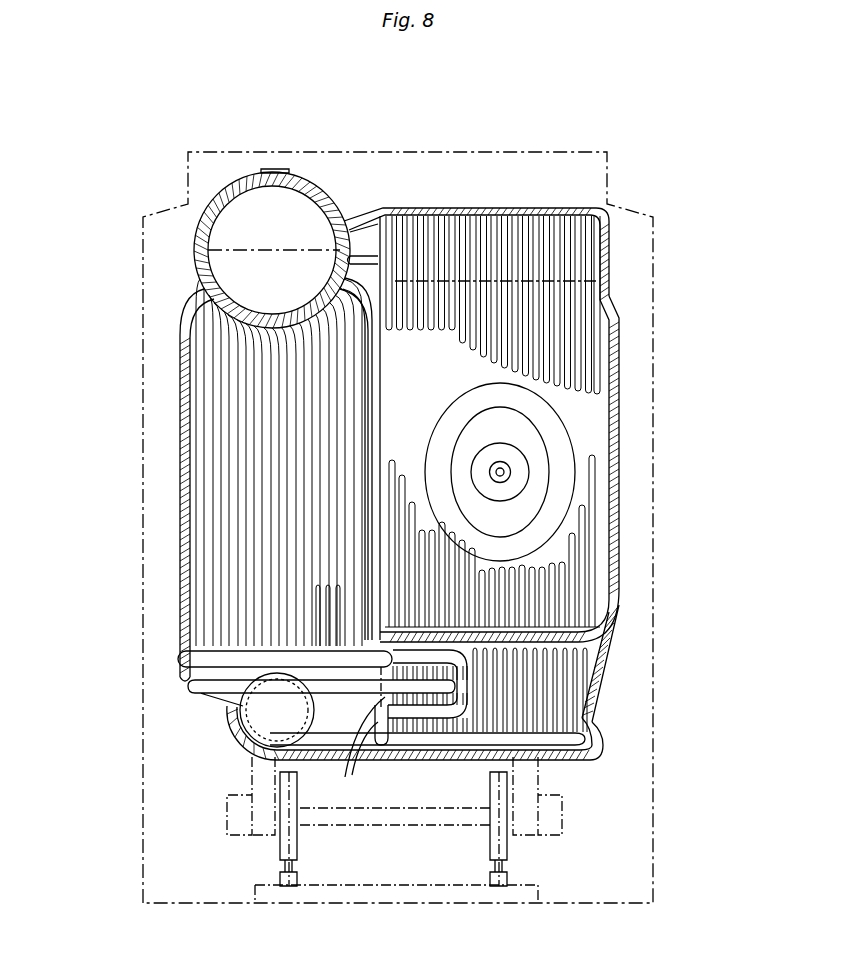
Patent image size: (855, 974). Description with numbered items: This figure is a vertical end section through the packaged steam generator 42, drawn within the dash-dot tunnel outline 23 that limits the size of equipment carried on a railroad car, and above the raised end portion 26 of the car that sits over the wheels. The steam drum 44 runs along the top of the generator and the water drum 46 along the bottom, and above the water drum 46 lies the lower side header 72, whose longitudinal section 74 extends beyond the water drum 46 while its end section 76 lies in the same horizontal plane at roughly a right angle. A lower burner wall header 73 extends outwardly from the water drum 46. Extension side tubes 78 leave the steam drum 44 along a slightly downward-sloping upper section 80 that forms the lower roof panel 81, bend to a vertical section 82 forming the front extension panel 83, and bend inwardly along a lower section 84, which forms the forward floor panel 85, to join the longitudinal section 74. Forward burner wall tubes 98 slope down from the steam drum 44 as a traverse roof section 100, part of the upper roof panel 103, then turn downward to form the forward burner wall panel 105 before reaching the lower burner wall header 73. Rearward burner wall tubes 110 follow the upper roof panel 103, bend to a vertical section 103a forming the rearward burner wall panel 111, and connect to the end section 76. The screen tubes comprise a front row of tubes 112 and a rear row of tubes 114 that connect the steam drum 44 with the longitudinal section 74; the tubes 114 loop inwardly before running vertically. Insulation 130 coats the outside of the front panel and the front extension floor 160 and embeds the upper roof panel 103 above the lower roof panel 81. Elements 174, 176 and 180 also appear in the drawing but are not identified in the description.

The tunnel outline 23 is at (468, 153).
The raised end portion 26 is at (243, 831).
The packaged steam generator 42 is at (176, 537).
The steam drum 44 is at (304, 200).
The water drum 46 is at (231, 737).
The lower side header 72 is at (174, 657).
The lower burner wall header 73 is at (590, 748).
The longitudinal section 74 is at (372, 658).
The end section 76 is at (237, 658).
The extension side tubes 78 is at (615, 373).
The upper section 80 is at (356, 257).
The lower roof panel 81 is at (560, 282).
The vertical section 82 is at (604, 422).
The front extension panel 83 is at (600, 452).
The lower section 84 is at (517, 645).
The forward floor panel 85 is at (542, 646).
The forward burner wall tubes 98 is at (594, 244).
The traverse roof section 100 is at (548, 215).
The upper roof panel 103 is at (230, 341).
The vertical section 103a is at (210, 460).
The forward burner wall panel 105 is at (222, 498).
The rearward burner wall tubes 110 is at (210, 552).
The rearward burner wall panel 111 is at (205, 408).
The front row of tubes 112 is at (356, 284).
The rear row of tubes 114 is at (358, 604).
The insulation 130 is at (464, 208).
The front extension floor 160 is at (522, 610).
The feed pipe 174 is at (340, 700).
The lower tube bank 176 is at (490, 690).
The pipe 180 is at (366, 745).